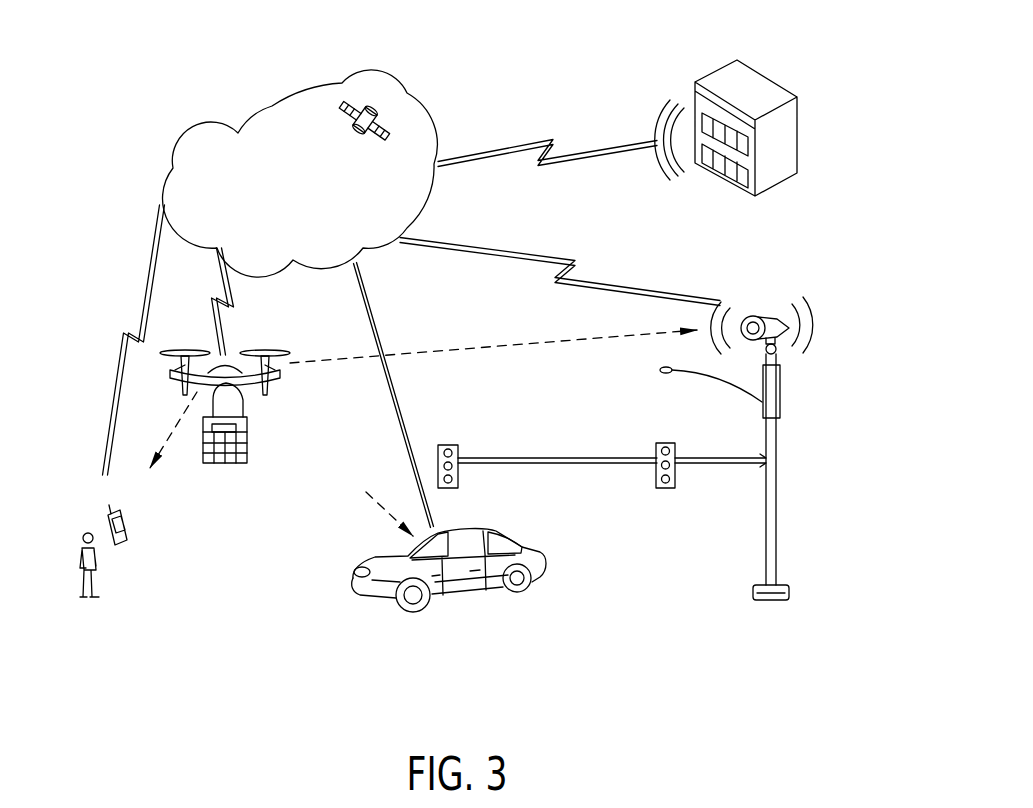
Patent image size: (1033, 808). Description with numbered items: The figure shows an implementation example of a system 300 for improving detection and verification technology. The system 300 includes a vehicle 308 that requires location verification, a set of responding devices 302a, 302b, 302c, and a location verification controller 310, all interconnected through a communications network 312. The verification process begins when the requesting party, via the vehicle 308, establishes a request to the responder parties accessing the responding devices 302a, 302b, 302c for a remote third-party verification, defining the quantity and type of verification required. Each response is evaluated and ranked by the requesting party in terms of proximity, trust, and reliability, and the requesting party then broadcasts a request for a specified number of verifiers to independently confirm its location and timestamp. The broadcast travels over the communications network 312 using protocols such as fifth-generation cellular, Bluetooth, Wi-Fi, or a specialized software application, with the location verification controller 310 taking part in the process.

The system 300 is at (155, 121).
The communications network 312 is at (268, 108).
The location verification controller 310 is at (722, 70).
The vehicle 308 is at (226, 464).
The responding device 302a is at (103, 583).
The responding device 302b is at (530, 581).
The responding device 302c is at (822, 341).